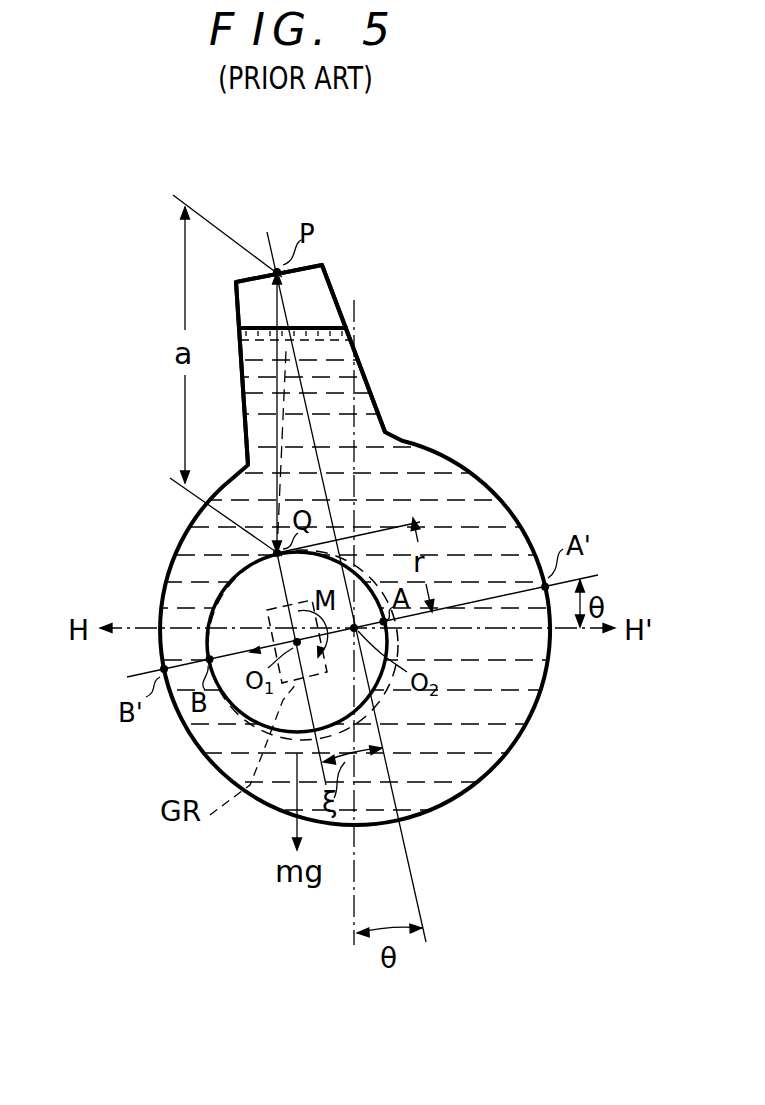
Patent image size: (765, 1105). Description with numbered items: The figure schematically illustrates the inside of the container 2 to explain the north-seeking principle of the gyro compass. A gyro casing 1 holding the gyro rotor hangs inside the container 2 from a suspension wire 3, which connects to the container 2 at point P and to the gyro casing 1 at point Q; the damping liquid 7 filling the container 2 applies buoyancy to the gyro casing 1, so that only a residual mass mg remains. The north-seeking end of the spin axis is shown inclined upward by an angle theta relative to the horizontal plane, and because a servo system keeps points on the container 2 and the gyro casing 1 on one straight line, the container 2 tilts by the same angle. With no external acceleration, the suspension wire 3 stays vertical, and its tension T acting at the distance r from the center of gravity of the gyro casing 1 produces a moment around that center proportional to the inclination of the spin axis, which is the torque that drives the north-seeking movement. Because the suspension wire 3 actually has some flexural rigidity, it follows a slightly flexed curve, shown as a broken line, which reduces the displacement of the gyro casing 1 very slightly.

The gyro casing 1 is at (232, 580).
The container 2 is at (460, 458).
The suspension wire 3 is at (275, 401).
The damping liquid 7 is at (478, 768).